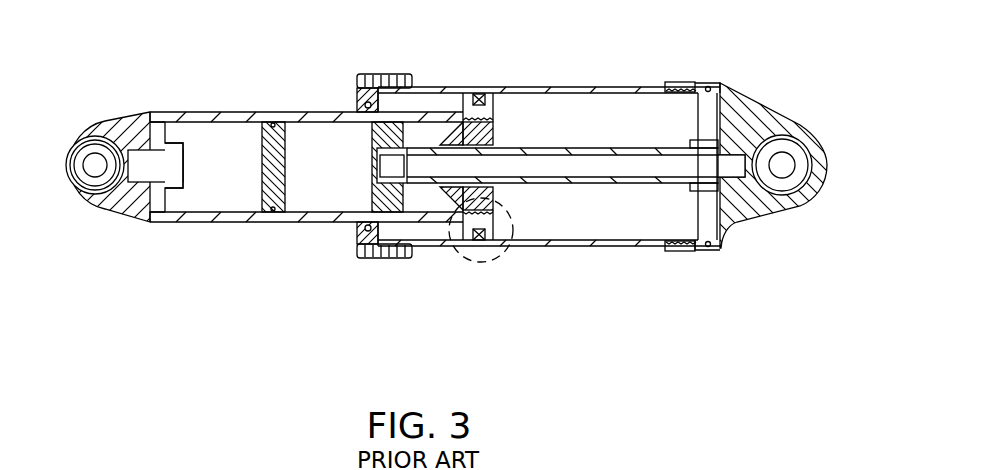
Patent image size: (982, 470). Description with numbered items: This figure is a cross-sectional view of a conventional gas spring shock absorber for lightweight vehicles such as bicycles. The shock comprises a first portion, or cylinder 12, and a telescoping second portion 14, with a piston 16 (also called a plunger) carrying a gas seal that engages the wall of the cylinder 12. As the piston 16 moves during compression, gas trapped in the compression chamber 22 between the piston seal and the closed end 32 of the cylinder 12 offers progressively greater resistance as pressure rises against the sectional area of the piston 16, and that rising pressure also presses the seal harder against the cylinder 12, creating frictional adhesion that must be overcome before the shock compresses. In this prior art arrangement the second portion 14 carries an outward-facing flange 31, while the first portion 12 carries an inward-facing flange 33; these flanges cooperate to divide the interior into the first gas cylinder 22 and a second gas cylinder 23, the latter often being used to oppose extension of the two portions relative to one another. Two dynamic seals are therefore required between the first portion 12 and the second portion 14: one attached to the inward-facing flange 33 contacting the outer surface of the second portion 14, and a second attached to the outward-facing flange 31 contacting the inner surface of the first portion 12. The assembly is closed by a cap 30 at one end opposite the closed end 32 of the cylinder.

The cylinder 12 is at (597, 244).
The second portion 14 is at (229, 114).
The piston 16 is at (488, 94).
The compression chamber 22 is at (574, 116).
The second gas cylinder 23 is at (421, 101).
The cap 30 is at (373, 76).
The outward-facing flange 31 is at (468, 108).
The closed end 32 is at (737, 243).
The inward-facing flange 33 is at (357, 236).